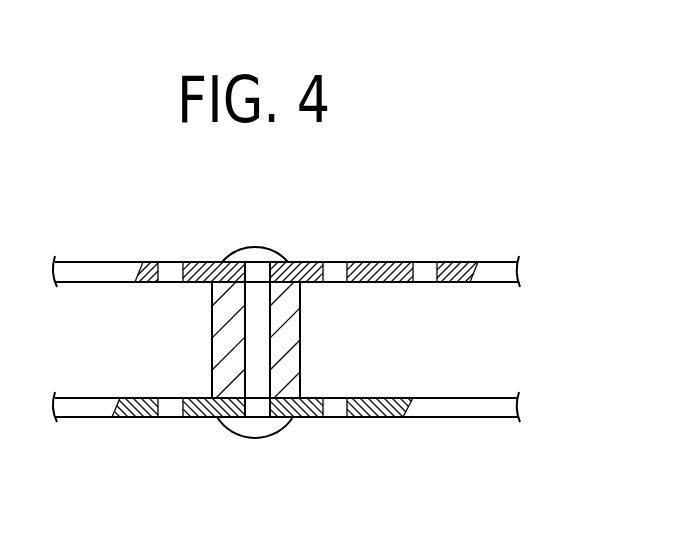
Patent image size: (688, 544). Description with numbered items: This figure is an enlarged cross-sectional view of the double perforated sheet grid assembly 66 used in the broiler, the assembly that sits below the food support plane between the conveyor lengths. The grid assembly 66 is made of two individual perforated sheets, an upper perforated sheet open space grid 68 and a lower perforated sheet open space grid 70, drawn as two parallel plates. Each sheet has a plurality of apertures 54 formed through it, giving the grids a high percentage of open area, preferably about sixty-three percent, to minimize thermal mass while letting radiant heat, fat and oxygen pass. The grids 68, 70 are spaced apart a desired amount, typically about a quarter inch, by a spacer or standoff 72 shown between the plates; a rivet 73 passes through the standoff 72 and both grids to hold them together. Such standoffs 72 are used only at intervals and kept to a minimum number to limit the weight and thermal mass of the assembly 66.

The perforated sheet open space grid assembly 66 is at (140, 428).
The upper perforated sheet open space grid 68 is at (377, 260).
The lower perforated sheet open space grid 70 is at (445, 418).
The spacer or standoff 72 is at (302, 353).
The rivet 73 is at (257, 246).
The aperture 54 is at (337, 260).